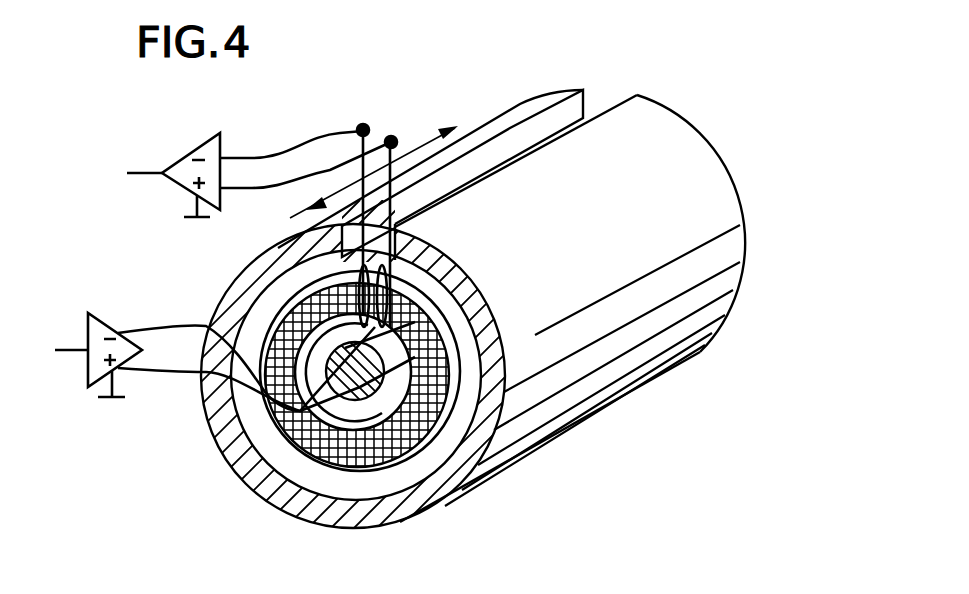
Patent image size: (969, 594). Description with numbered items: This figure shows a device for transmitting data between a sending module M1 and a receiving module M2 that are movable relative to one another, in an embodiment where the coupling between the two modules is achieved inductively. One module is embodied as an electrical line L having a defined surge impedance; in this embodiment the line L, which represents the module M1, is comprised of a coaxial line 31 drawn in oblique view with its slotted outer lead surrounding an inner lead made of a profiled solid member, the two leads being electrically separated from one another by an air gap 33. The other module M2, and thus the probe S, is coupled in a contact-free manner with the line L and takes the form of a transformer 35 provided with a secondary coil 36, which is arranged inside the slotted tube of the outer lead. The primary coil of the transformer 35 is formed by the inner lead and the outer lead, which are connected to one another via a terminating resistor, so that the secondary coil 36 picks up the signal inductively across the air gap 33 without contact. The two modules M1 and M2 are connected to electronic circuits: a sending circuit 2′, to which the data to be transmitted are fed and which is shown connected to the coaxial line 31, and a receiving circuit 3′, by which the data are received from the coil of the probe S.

The coaxial line 31 is at (660, 90).
The air gap 33 is at (362, 480).
The transformer 35 is at (288, 310).
The secondary coil 36 is at (367, 280).
The probe S is at (432, 346).
The sending electronic circuit 2′ is at (197, 155).
The receiving electronic circuit 3′ is at (88, 372).
The sending module M1 is at (206, 454).
The receiving module M2 is at (406, 464).
The electrical line L is at (258, 497).